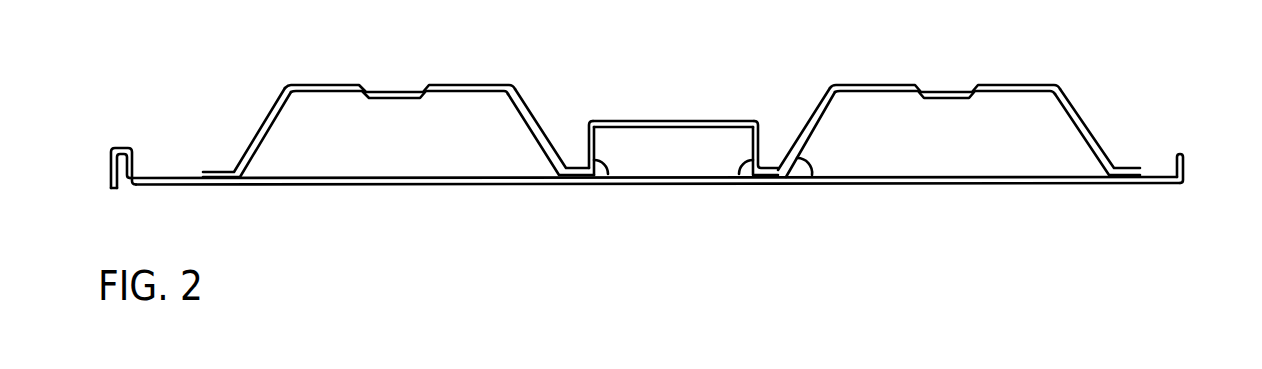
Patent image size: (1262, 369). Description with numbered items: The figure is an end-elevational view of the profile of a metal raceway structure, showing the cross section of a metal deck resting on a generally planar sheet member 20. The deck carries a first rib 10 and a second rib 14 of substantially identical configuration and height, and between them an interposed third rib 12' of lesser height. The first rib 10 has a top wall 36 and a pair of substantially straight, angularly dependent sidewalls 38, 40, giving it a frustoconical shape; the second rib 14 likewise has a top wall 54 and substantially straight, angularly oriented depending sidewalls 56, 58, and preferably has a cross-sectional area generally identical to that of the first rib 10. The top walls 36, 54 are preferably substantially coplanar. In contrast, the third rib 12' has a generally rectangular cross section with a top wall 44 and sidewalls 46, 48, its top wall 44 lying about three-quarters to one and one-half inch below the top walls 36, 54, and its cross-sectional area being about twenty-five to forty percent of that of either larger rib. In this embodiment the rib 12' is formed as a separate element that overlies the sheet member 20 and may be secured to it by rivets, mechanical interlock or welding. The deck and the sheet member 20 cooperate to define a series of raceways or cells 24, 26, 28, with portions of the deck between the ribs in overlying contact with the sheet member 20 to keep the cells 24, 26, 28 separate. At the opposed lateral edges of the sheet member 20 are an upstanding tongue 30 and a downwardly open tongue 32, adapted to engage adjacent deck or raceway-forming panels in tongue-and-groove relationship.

The first rib 10 is at (394, 106).
The third rib 12' is at (683, 142).
The second rib 14 is at (959, 128).
The sheet member 20 is at (650, 181).
The cell 24 is at (408, 147).
The cell 26 is at (690, 157).
The cell 28 is at (964, 147).
The upstanding tongue 30 is at (1184, 163).
The downwardly open tongue 32 is at (110, 168).
The top wall 36 is at (340, 90).
The sidewall 38 is at (254, 133).
The sidewall 40 is at (534, 115).
The top wall 44 is at (635, 122).
The sidewall 46 is at (605, 177).
The sidewall 48 is at (741, 174).
The top wall 54 is at (1036, 92).
The sidewall 56 is at (808, 177).
The sidewall 58 is at (1097, 152).